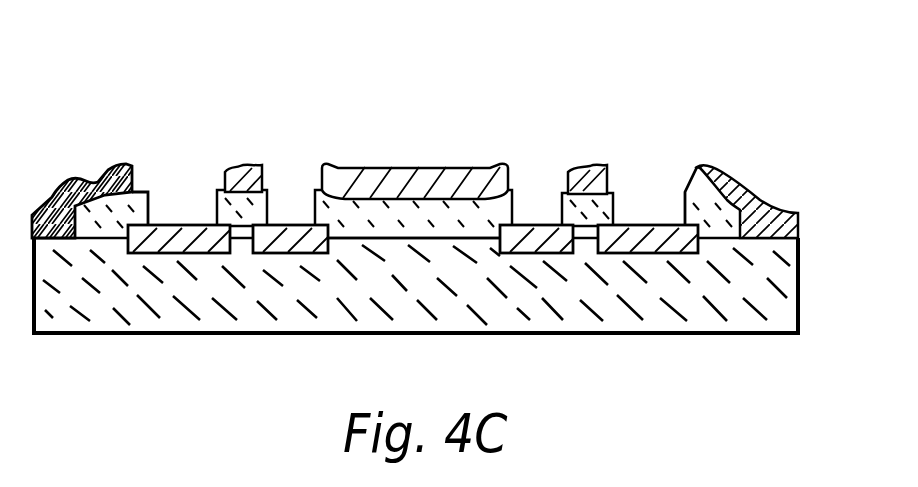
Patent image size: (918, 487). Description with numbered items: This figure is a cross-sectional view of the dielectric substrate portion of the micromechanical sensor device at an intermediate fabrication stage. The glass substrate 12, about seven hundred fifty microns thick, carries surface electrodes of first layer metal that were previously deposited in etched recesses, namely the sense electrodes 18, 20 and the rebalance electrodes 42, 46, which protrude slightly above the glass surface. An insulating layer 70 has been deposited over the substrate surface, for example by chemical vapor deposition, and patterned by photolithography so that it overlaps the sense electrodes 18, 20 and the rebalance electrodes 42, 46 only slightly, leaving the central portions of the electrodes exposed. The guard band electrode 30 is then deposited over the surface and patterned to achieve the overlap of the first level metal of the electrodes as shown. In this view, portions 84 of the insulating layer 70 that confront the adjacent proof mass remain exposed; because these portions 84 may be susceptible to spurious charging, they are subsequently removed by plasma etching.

The glass substrate 12 is at (798, 281).
The guard band electrode 30 is at (798, 228).
The sense electrode 18 is at (182, 225).
The rebalance electrode 42 is at (295, 225).
The rebalance electrode 46 is at (542, 225).
The sense electrode 20 is at (650, 225).
The exposed portions of insulating layer 84 is at (613, 177).
The insulating layer 70 is at (724, 171).